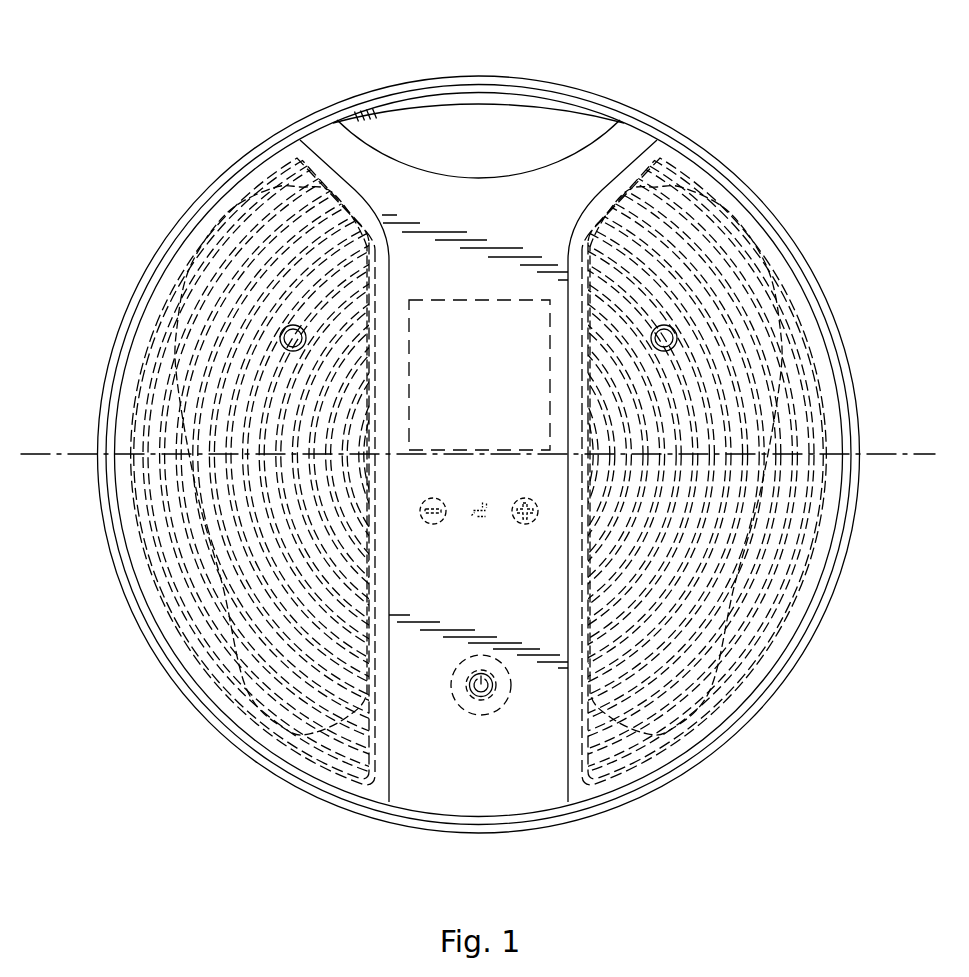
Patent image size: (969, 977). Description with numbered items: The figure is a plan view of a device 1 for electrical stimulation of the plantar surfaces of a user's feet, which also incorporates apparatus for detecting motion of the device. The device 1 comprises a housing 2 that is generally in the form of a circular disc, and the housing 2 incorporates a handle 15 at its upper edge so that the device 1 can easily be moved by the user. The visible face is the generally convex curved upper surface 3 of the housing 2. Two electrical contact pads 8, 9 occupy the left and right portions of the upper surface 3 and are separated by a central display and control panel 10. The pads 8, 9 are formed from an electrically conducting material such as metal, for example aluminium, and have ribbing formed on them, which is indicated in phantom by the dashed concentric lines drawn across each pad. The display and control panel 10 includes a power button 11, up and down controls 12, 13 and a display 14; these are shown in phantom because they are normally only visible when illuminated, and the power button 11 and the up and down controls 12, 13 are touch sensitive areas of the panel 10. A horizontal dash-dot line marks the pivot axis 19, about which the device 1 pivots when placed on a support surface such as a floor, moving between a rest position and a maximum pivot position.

The device 1 is at (479, 447).
The housing 2 is at (478, 445).
The upper surface 3 is at (479, 489).
The electrical contact pad 8 is at (472, 455).
The electrical contact pad 9 is at (214, 224).
The display and control panel 10 is at (478, 512).
The power button 11 is at (524, 761).
The up control 12 is at (702, 555).
The down control 13 is at (273, 598).
The display 14 is at (479, 375).
The handle 15 is at (478, 97).
The pivot axis 19 is at (478, 417).